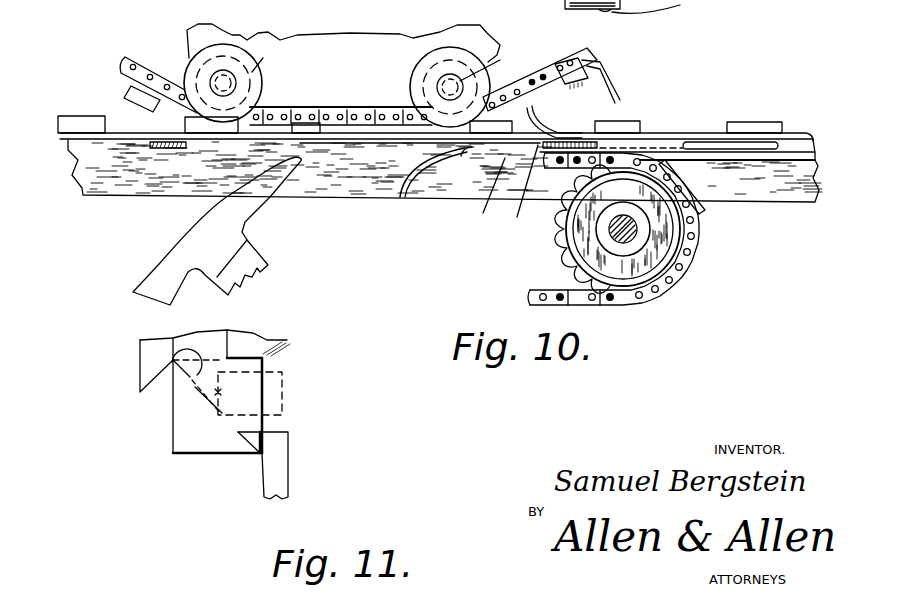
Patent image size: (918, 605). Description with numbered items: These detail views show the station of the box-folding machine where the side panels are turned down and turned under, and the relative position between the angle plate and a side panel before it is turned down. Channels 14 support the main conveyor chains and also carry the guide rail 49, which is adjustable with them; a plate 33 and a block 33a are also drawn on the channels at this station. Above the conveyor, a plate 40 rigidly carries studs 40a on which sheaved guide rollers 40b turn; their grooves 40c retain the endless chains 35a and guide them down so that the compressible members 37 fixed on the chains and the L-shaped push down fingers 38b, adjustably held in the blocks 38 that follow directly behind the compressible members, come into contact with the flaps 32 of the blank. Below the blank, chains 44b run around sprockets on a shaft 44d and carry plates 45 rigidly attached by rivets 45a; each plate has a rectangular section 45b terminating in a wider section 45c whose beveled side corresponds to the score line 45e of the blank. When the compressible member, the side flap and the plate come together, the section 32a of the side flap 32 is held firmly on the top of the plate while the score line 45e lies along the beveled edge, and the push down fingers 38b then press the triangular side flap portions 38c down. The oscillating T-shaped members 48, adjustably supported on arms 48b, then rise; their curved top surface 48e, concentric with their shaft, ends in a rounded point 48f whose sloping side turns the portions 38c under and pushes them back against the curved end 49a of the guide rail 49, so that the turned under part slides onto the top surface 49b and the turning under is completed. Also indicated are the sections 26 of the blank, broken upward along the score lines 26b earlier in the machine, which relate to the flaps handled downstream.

In FIG. 10, the channels 14 is at (80, 162).
In FIG. 10, the plate 33 is at (62, 137).
In FIG. 10, the blocks 33a is at (77, 124).
In FIG. 10, the plates 45 is at (170, 150).
In FIG. 11, the plates 45 is at (289, 488).
In FIG. 10, the rivets 45a is at (703, 196).
In FIG. 10, the plate 40 is at (343, 54).
In FIG. 10, the studs 40a is at (358, 77).
In FIG. 10, the sheaved guide rollers 40b is at (233, 44).
In FIG. 10, the grooves 40c is at (450, 58).
In FIG. 10, the compressible members 37 is at (150, 92).
In FIG. 11, the compressible members 37 is at (202, 403).
In FIG. 10, the endless chains 35a is at (563, 52).
In FIG. 10, the blocks 38 is at (567, 115).
In FIG. 10, the L-shaped push down fingers 38b is at (612, 81).
In FIG. 11, the side flap portions 38c is at (210, 438).
In FIG. 10, the guide rail 49 is at (486, 197).
In FIG. 10, the curved end 49a is at (416, 198).
In FIG. 10, the top surface 49b is at (461, 156).
In FIG. 10, the flaps 32 is at (520, 193).
In FIG. 11, the flaps 32 is at (195, 387).
In FIG. 11, the section 32a is at (173, 343).
In FIG. 10, the shaft 44d is at (637, 235).
In FIG. 10, the chains 44b is at (623, 305).
In FIG. 10, the T-shaped members 48 is at (232, 238).
In FIG. 10, the arms 48b is at (253, 257).
In FIG. 10, the top surface 48e is at (152, 253).
In FIG. 10, the rounded point 48f is at (304, 160).
In FIG. 11, the sections 26 is at (290, 343).
In FIG. 11, the score lines 26b is at (282, 373).
In FIG. 11, the rectangular section 45b is at (289, 460).
In FIG. 11, the wider section 45c is at (273, 440).
In FIG. 11, the score line 45e is at (282, 400).